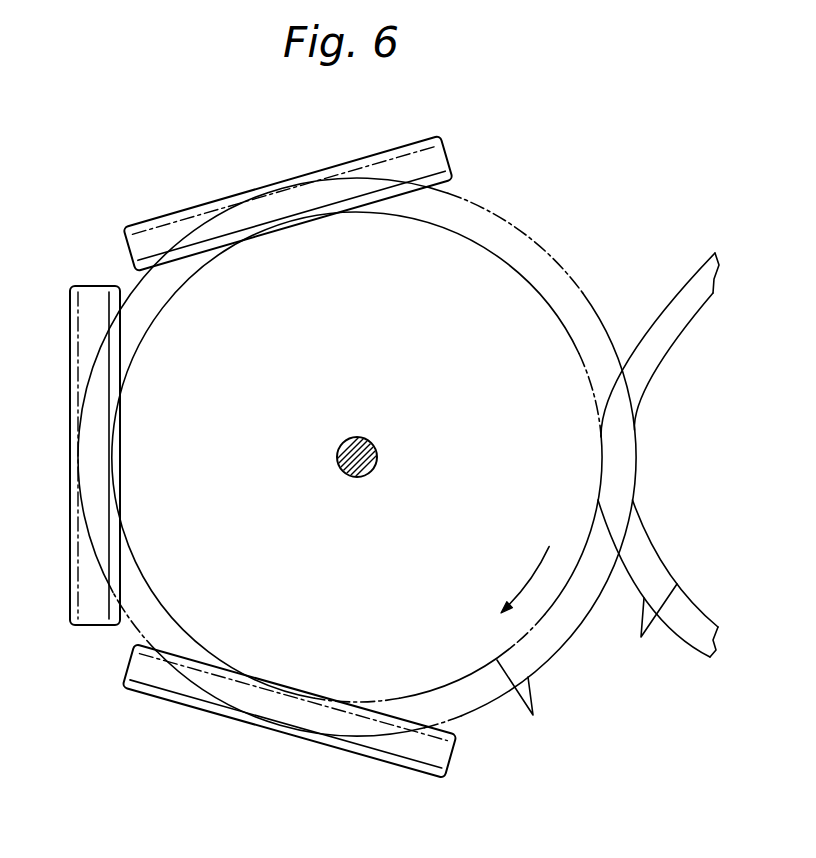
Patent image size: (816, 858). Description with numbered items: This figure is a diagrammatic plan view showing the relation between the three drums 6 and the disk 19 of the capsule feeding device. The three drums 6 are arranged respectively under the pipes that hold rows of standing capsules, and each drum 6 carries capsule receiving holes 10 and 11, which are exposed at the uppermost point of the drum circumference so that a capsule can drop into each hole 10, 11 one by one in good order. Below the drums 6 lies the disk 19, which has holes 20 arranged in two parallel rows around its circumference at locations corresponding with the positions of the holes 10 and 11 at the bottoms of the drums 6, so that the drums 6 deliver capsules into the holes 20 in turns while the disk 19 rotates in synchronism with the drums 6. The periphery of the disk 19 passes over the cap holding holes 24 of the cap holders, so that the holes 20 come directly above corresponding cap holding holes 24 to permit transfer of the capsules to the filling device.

The drum 6 is at (182, 208).
The capsule receiving hole 10 is at (218, 208).
The capsule receiving hole 11 is at (248, 230).
The disk 19 is at (535, 608).
The hole 20 is at (530, 711).
The cap holding hole 24 is at (658, 462).